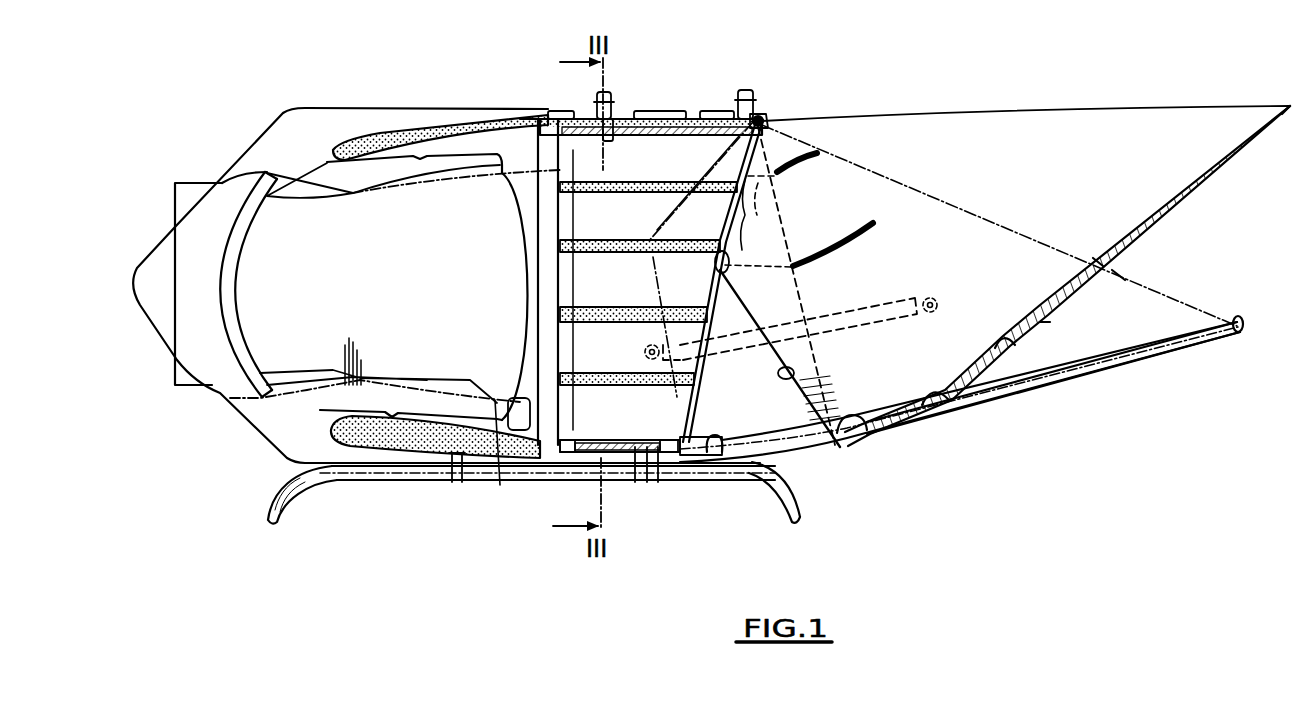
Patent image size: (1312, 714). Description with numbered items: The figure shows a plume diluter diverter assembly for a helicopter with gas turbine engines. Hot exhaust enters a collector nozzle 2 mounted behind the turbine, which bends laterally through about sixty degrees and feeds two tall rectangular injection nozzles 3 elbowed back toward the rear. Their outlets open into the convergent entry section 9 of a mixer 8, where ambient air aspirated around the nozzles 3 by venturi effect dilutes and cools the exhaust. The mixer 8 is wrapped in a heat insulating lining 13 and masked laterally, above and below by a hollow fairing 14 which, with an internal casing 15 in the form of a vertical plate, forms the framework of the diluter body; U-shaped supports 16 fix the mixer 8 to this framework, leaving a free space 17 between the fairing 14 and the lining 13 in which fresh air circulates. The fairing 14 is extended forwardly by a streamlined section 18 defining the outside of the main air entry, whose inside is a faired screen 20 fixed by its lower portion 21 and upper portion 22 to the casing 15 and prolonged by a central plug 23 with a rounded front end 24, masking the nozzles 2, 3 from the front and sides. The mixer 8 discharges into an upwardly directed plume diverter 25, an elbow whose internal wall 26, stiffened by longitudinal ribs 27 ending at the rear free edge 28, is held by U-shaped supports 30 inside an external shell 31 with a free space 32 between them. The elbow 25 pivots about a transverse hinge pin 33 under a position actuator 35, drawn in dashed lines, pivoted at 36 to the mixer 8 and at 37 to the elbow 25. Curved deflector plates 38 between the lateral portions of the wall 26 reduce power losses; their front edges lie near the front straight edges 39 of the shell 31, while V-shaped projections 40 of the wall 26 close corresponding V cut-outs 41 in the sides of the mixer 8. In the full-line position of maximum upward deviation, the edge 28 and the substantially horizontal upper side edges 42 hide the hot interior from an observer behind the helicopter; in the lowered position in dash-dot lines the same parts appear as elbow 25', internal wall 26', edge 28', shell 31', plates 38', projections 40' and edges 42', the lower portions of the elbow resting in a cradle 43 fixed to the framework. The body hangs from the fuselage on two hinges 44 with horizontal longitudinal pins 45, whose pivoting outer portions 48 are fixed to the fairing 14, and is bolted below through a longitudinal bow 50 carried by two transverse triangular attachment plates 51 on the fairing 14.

The collector nozzle 2 is at (200, 183).
The injection nozzles 3 is at (528, 395).
The mixer 8 is at (635, 440).
The entry section 9 is at (545, 140).
The external heat insulating lining 13 is at (653, 125).
The hollow fairing 14 is at (648, 450).
The internal casing 15 is at (447, 109).
The supports 16 is at (596, 130).
The free space 17 is at (657, 120).
The front section 18 is at (385, 456).
The faired screen 20 is at (498, 447).
The lower portion 21 is at (340, 383).
The upper portion 22 is at (323, 178).
The central plug 23 is at (394, 287).
The front end 24 is at (225, 283).
The plume diverter 25 is at (1079, 364).
The plume diverter in lowered position 25' is at (1053, 392).
The internal wall 26 is at (943, 427).
The internal wall in lowered position 26' is at (711, 477).
The longitudinal ribs 27 is at (1098, 252).
The rear free edge 28 is at (1275, 80).
The rear free edge in lowered position 28' is at (1227, 354).
The U-shaped supports 30 is at (1008, 345).
The external shell 31 is at (1125, 293).
The external shell in lowered position 31' is at (960, 420).
The internal free space 32 is at (1188, 188).
The hinge pin 33 is at (765, 118).
The position actuator 35 is at (828, 315).
The front pivot 36 is at (655, 350).
The rear pivot 37 is at (940, 300).
The deflector plates 38 is at (799, 210).
The deflector plates in lowered position 38' is at (747, 215).
The front straight edges 39 is at (856, 446).
The V-shaped projection 40 is at (716, 280).
The V-shaped projection in lowered position 40' is at (678, 259).
The V cut-out 41 is at (782, 378).
The upper side edges 42 is at (1026, 95).
The upper side edges in lowered position 42' is at (999, 225).
The cradle 43 is at (820, 468).
The hinges 44 is at (622, 99).
The horizontal longitudinal pins 45 is at (758, 118).
The pivoting outer portions 48 is at (746, 88).
The longitudinal bow 50 is at (297, 488).
The transverse triangular attachment plates 51 is at (460, 483).